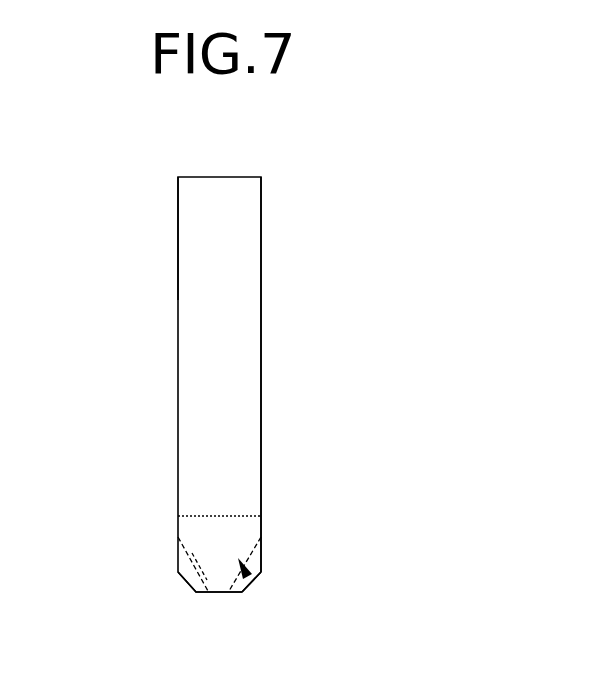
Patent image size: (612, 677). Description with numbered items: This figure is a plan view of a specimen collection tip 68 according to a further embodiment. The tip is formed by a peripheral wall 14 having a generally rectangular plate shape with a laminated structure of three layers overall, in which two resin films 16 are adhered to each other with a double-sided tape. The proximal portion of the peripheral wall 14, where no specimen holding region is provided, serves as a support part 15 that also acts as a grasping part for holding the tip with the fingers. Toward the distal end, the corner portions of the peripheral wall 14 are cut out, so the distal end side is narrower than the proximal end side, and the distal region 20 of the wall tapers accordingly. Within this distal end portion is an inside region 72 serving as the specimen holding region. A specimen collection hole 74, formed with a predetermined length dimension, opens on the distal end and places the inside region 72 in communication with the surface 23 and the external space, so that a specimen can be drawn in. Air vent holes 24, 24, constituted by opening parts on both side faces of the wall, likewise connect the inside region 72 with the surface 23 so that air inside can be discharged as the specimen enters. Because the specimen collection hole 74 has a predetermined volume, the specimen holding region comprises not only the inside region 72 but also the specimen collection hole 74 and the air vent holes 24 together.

The specimen collection tip 68 is at (336, 146).
The peripheral wall 14 is at (160, 327).
The support part 15 is at (270, 232).
The resin film 16 is at (237, 337).
The surface 23 is at (192, 249).
The air vent hole 24 is at (177, 519).
The distal end 20 is at (197, 583).
The inside region 72 is at (247, 578).
The specimen collection hole 74 is at (213, 593).